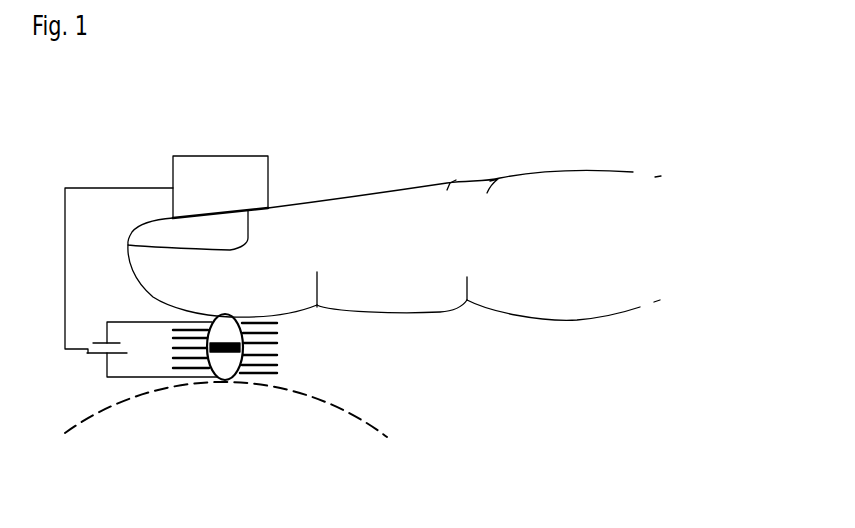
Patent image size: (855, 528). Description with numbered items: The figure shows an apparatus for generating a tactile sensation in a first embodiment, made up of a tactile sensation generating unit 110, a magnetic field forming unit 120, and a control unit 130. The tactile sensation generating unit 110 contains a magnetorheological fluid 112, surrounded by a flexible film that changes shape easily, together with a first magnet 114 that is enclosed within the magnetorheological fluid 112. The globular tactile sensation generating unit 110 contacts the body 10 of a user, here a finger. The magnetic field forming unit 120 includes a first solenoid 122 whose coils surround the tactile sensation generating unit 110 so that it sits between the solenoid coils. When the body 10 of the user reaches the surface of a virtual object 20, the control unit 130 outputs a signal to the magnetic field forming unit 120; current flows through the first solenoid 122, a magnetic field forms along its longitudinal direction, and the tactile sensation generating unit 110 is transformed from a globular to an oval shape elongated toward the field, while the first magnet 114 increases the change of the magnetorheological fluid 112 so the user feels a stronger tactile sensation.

The body 10 is at (377, 210).
The virtual object 20 is at (357, 418).
The tactile sensation generating unit 110 is at (217, 417).
The magnetorheological fluid 112 is at (235, 381).
The first magnet 114 is at (218, 383).
The magnetic field forming unit 120 is at (298, 352).
The first solenoid 122 is at (277, 357).
The control unit 130 is at (245, 163).